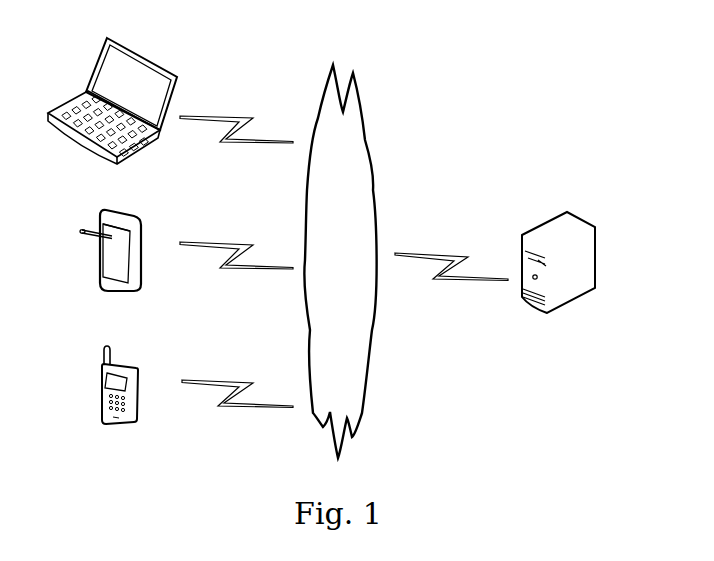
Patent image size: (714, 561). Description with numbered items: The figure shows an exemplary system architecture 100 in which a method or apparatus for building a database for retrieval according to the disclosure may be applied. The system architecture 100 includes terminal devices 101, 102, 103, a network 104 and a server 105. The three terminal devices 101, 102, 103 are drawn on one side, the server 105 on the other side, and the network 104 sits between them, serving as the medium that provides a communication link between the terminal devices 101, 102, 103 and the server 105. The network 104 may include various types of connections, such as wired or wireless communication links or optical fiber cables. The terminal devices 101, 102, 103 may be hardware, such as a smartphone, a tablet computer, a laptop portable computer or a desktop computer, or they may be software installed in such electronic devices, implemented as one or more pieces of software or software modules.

The system architecture 100 is at (563, 16).
The terminal device 101 is at (120, 402).
The terminal device 102 is at (110, 266).
The terminal device 103 is at (112, 115).
The network 104 is at (340, 261).
The server 105 is at (558, 277).